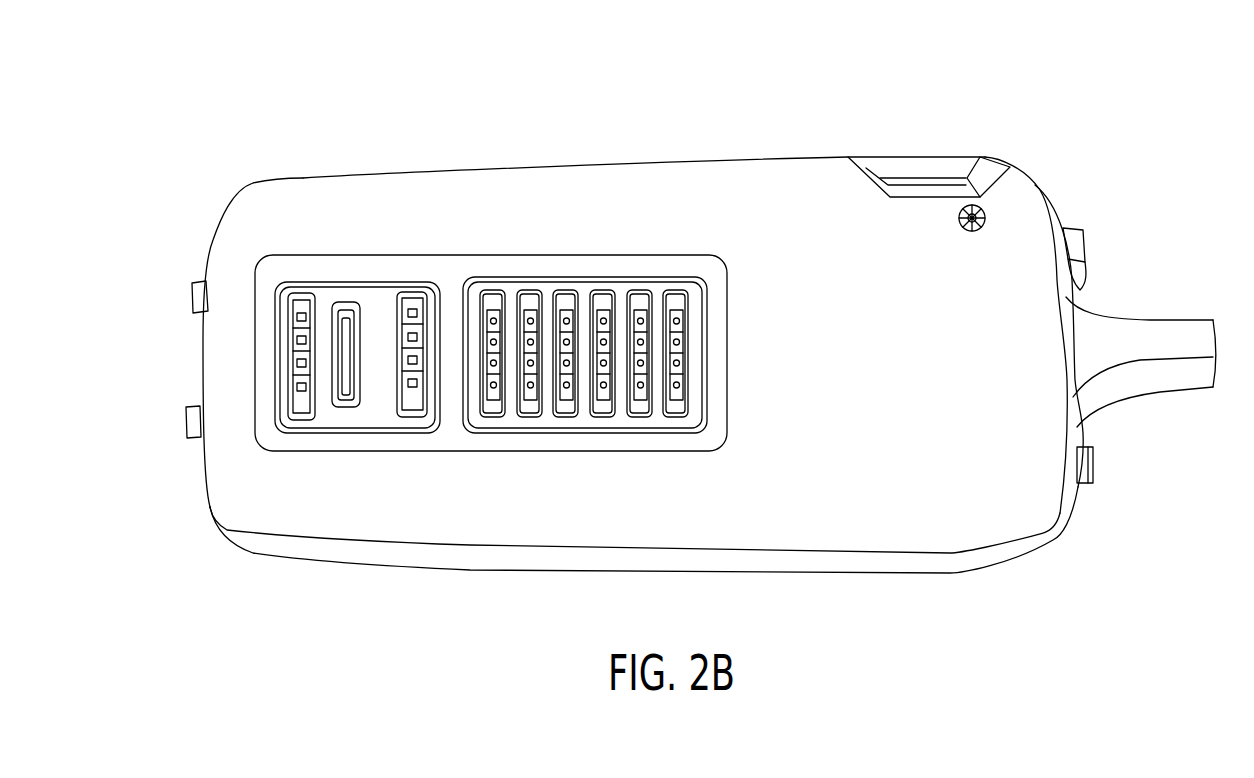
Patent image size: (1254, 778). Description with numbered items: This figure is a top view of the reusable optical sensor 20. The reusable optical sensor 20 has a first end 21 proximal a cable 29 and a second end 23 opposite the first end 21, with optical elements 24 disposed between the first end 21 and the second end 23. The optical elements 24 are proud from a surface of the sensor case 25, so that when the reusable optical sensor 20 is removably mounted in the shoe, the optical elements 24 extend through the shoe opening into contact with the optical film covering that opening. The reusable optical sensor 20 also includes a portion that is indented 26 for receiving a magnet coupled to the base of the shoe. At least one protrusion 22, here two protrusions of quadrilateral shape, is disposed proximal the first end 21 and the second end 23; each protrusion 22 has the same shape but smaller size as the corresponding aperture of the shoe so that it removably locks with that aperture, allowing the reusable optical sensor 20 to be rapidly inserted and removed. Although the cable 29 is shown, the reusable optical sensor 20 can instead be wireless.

The reusable optical sensor 20 is at (712, 114).
The first end 21 is at (1043, 533).
The protrusion 22 is at (202, 280).
The second end 23 is at (212, 507).
The optical elements 24 is at (492, 300).
The sensor case 25 is at (584, 177).
The indented portion 26 is at (937, 167).
The cable 29 is at (1152, 330).